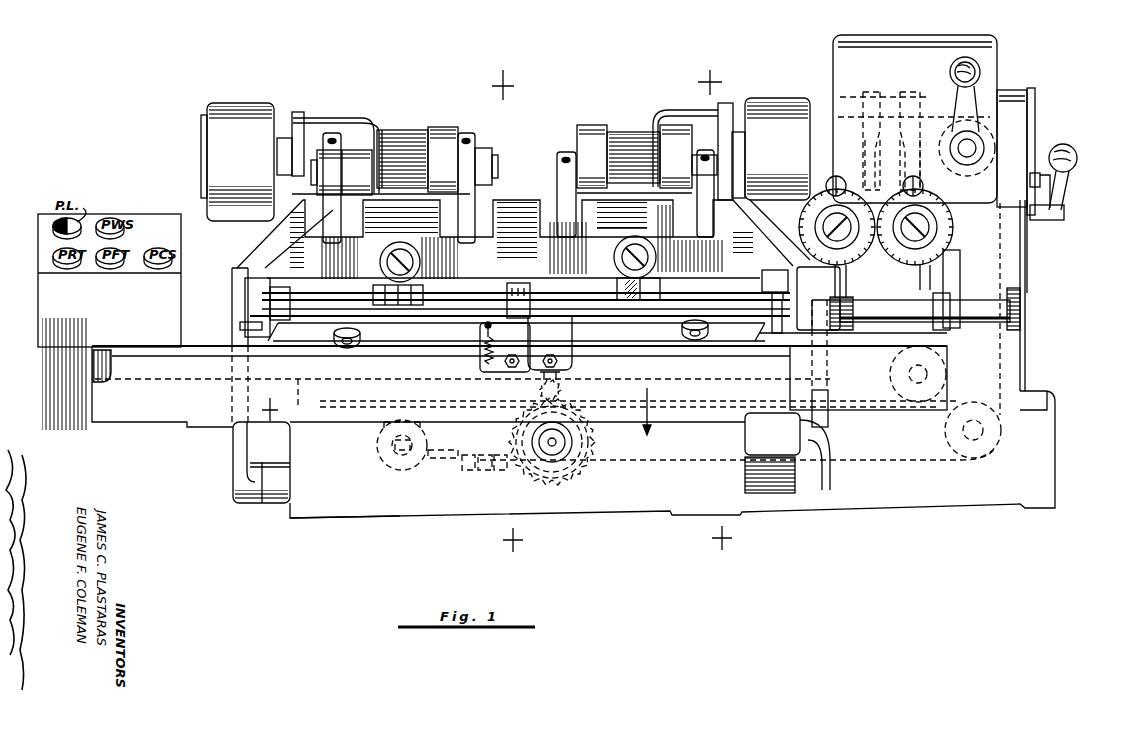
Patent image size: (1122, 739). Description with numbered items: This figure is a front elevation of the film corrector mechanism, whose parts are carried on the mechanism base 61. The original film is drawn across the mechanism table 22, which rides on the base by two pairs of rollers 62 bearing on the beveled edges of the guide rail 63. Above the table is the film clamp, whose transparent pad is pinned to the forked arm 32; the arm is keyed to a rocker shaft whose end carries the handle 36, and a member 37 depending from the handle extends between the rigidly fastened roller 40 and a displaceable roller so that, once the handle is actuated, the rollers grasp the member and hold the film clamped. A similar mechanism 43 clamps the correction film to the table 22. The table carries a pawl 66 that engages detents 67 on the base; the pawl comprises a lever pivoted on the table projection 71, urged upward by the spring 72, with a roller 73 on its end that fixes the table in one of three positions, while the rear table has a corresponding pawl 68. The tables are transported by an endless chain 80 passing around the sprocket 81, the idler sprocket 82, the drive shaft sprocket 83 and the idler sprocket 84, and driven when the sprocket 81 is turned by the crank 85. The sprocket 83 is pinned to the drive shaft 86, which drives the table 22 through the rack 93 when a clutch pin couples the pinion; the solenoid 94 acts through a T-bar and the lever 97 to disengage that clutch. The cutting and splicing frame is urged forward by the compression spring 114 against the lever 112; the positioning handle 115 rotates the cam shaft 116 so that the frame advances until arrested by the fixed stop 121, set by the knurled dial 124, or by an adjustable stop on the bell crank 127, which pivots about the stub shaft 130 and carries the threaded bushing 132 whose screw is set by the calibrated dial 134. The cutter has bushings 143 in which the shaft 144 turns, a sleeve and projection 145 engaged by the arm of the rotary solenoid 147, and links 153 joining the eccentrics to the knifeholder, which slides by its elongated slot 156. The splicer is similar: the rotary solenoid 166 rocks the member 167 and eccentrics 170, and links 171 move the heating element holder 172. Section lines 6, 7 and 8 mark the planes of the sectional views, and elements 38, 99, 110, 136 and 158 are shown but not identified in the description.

The section line 6- 6 is at (463, 411).
The section line 7- 7 is at (507, 312).
The section line 8- 8 is at (715, 309).
The mechanism table 22 is at (243, 325).
The forked arm 32 is at (620, 283).
The handle 36 is at (778, 270).
The member 37 is at (774, 334).
The block 38 is at (525, 278).
The rigidly fastened roller 40 is at (812, 395).
The clamping mechanism 43 is at (424, 287).
The mechanism base 61 is at (323, 519).
The rollers 62 is at (350, 350).
The guide rail 63 is at (101, 348).
The pawl 66 is at (550, 355).
The detents 67 is at (512, 355).
The pawl 68 is at (405, 345).
The table projection 71 is at (574, 327).
The spring 72 is at (484, 334).
The roller 73 is at (520, 373).
The endless chain 80 is at (1027, 357).
The sprocket 81 is at (995, 130).
The idler sprocket 82 is at (993, 445).
The drive shaft sprocket 83 is at (570, 470).
The idler sprocket 84 is at (890, 387).
The crank 85 is at (981, 70).
The drive shaft 86 is at (556, 443).
The rack 93 is at (298, 388).
The solenoid 94 is at (401, 460).
The lever 97 is at (462, 464).
The plate 99 is at (233, 268).
The frame 110 is at (275, 232).
The lever 112 is at (866, 160).
The compression spring 114 is at (832, 289).
The positioning handle 115 is at (1073, 150).
The cam shaft 116 is at (1005, 214).
The fixed stop 121 is at (842, 190).
The knurled dial 124 is at (862, 258).
The bell crank 127 is at (955, 122).
The stub shaft 130 is at (866, 79).
The threaded bushing 132 is at (908, 190).
The calibrated knurled dial 134 is at (922, 258).
The hub 136 is at (958, 170).
The bushings 143 is at (466, 121).
The shaft 144 is at (628, 132).
The sleeve and projection 145 is at (672, 110).
The rotary solenoid 147 is at (783, 100).
The links 153 is at (563, 152).
The elongated slot 156 is at (626, 252).
The block 158 is at (648, 234).
The rotary solenoid 166 is at (266, 106).
The member 167 is at (410, 134).
The eccentrics 170 is at (345, 172).
The links 171 is at (333, 133).
The movable heating element holder 172 is at (380, 280).